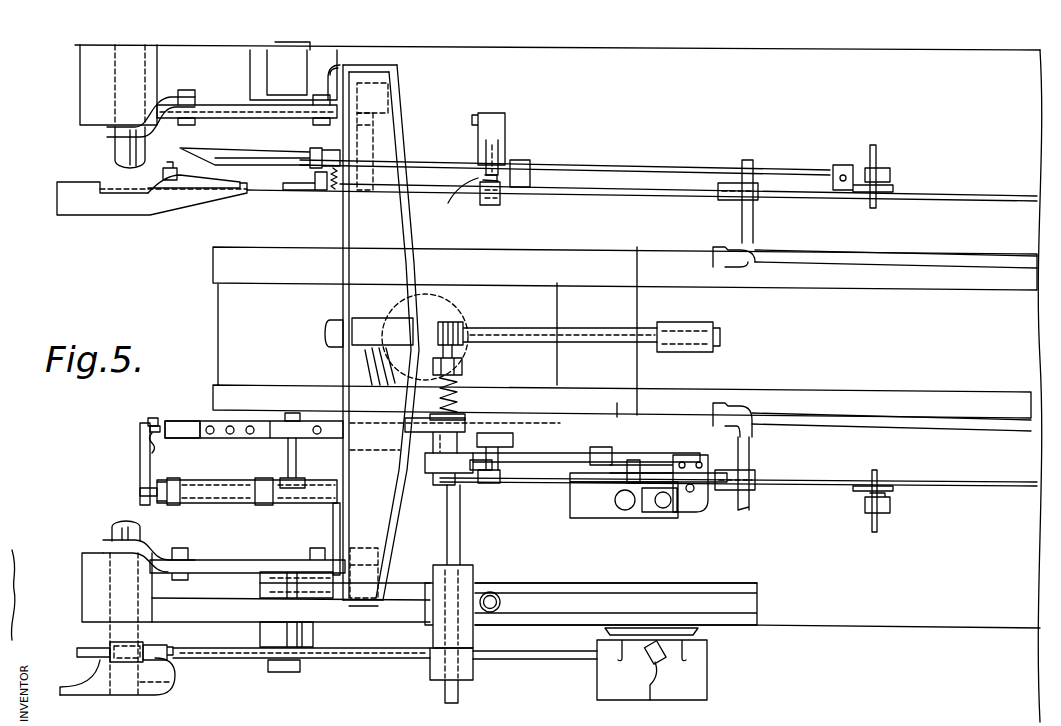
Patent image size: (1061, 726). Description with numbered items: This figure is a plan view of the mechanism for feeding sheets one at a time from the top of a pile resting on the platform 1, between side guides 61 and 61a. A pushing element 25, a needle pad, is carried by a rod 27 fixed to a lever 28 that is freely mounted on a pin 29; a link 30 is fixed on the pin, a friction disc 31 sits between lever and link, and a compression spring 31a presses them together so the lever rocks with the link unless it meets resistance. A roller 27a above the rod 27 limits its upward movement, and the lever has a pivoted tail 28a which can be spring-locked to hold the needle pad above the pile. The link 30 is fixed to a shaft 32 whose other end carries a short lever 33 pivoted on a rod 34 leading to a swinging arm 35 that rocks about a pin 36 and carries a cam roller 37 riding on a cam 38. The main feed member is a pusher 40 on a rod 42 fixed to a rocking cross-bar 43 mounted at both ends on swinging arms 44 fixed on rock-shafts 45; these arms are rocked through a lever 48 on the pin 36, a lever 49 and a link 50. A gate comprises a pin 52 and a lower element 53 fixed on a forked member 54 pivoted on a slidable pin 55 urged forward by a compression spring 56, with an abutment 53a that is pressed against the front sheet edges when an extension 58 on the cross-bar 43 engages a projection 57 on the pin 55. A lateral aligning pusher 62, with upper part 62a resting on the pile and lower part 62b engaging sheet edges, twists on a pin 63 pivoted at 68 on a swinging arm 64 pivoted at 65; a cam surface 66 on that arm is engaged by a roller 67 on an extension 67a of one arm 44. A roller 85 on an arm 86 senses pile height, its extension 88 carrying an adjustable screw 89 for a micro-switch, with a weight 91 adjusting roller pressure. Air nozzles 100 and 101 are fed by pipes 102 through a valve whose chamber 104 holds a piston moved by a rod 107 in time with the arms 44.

The platform 1 is at (616, 405).
The pushing element 25 is at (190, 421).
The rod 27 is at (332, 434).
The roller 27a is at (290, 413).
The lever 28 is at (440, 420).
The pivoted tail 28a is at (499, 448).
The pin 29 is at (459, 397).
The link 30 is at (468, 480).
The friction disc 31 is at (428, 464).
The compression spring 31a is at (460, 378).
The shaft 32 is at (462, 530).
The short lever 33 is at (475, 678).
The rod 34 is at (378, 652).
The swinging arm 35 is at (150, 641).
The pin 36 is at (170, 684).
The cam roller 37 is at (165, 660).
The cam 38 is at (92, 652).
The pusher 40 is at (677, 324).
The rod 42 is at (585, 331).
The rocking cross-bar 43 is at (392, 279).
The swinging arms 44 is at (320, 598).
The rock-shafts 45 is at (280, 672).
The lever 48 is at (70, 685).
The lever 49 is at (150, 557).
The link 50 is at (237, 562).
The pin 52 is at (158, 425).
The lower element 53 is at (148, 414).
The abutment 53a is at (153, 438).
The forked member 54 is at (140, 452).
The pin 55 is at (300, 492).
The compression spring 56 is at (175, 502).
The projection 57 is at (365, 559).
The extension 58 is at (333, 530).
The side guide 61 is at (586, 197).
The side guide 61a is at (838, 483).
The pusher 62 is at (483, 196).
The upper extending part 62a is at (489, 206).
The lower part 62b is at (505, 196).
The pin 63 is at (452, 200).
The swinging arm 64 is at (575, 168).
The pivot 65 is at (840, 172).
The cam surface 66 is at (262, 155).
The roller 67 is at (372, 150).
The extension 67a is at (385, 114).
The pivot 68 is at (485, 136).
The roller 85 is at (501, 463).
The arm 86 is at (551, 459).
The extension 88 is at (648, 470).
The adjustable screw 89 is at (618, 506).
The weight 91 is at (606, 452).
The nozzles 100 is at (720, 248).
The nozzle 101 is at (328, 180).
The pipes 102 is at (690, 680).
The chamber 104 is at (640, 662).
The rod 107 is at (550, 658).